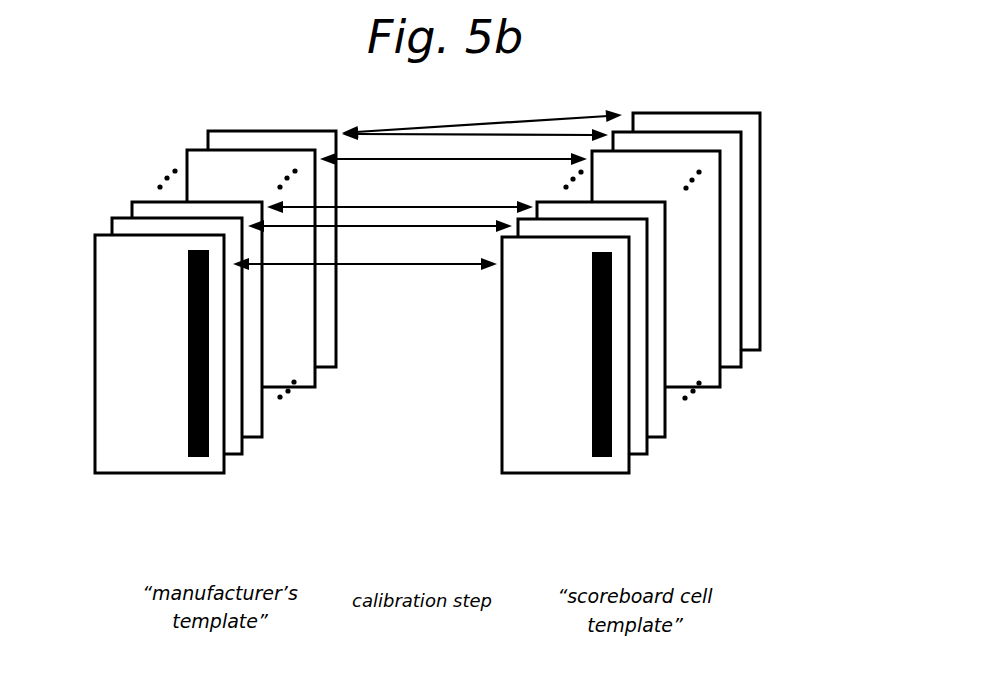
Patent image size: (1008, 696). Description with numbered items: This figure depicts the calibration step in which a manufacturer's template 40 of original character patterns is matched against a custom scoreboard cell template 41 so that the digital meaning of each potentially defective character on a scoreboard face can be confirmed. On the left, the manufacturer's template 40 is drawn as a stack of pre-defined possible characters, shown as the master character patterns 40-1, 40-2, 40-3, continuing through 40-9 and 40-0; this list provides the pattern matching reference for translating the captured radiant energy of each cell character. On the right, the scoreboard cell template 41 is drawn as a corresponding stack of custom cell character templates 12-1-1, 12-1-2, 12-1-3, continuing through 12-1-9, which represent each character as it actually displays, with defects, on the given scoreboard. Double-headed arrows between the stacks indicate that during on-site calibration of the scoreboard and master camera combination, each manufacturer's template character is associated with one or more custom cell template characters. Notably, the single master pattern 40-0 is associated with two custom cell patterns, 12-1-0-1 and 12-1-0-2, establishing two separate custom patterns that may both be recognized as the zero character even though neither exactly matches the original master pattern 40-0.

The manufacturer's template 40 is at (100, 168).
The scoreboard cell template 41 is at (789, 168).
The manufacturer's template character "0" 40-0 is at (337, 312).
The manufacturer's template character "1" 40-1 is at (152, 473).
The manufacturer's template character "2" 40-2 is at (233, 456).
The manufacturer's template character "3" 40-3 is at (262, 413).
The manufacturer's template character "9" 40-9 is at (316, 354).
The custom cell template character "1" 12-1-1 is at (558, 473).
The custom cell template character "2" 12-1-2 is at (642, 458).
The custom cell template character "3" 12-1-3 is at (665, 413).
The custom cell template character "9" 12-1-9 is at (722, 355).
The first custom cell template character "0" 12-1-0-1 is at (742, 313).
The second custom cell template character "0" 12-1-0-2 is at (760, 232).